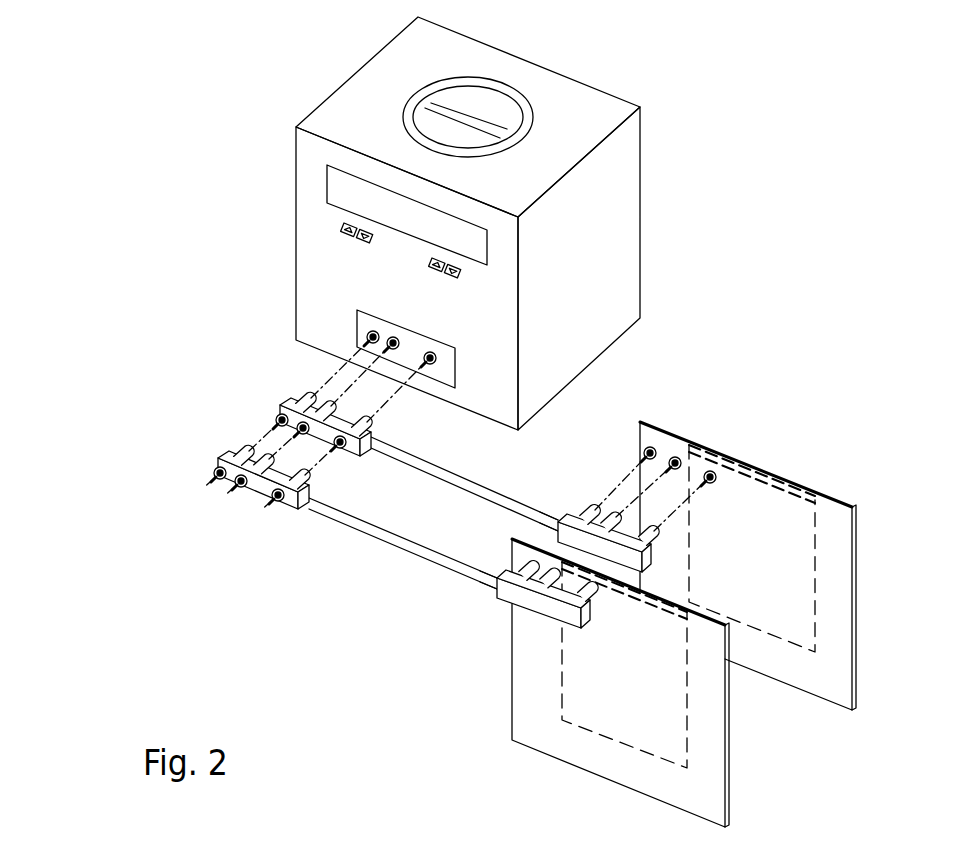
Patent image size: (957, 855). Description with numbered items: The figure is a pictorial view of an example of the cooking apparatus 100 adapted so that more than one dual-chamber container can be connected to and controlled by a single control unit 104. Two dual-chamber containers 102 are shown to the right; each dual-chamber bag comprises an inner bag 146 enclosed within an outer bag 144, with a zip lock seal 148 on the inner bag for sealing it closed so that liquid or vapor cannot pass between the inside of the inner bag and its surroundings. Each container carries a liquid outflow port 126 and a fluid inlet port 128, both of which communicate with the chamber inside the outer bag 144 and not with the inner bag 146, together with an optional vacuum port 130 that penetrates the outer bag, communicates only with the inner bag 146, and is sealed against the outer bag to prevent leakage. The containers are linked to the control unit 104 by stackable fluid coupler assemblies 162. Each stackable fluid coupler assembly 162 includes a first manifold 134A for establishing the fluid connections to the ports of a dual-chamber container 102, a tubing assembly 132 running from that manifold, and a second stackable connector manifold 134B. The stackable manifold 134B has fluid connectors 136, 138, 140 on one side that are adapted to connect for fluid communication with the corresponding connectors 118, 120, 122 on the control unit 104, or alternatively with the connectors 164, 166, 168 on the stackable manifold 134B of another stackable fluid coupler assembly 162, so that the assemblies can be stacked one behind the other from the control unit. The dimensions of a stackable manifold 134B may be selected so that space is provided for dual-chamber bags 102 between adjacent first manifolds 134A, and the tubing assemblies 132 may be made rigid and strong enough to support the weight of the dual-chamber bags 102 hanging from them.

The apparatus 100 is at (853, 128).
The dual-chamber container 102 is at (855, 507).
The control unit 104 is at (297, 230).
The connector on control unit 118 is at (367, 340).
The connector on control unit 120 is at (392, 337).
The connector on control unit 122 is at (437, 360).
The fluid outlet port 126 is at (652, 446).
The fluid inlet port 128 is at (677, 457).
The vacuum port 130 is at (710, 470).
The tubing assembly 132 is at (490, 486).
The first manifold 134A is at (645, 557).
The second stackable connector manifold 134B is at (276, 417).
The fluid connector 136 is at (248, 443).
The fluid connector 138 is at (267, 437).
The fluid connector 140 is at (313, 475).
The outer bag 144 is at (624, 776).
The inner bag 146 is at (688, 740).
The zip lock seal 148 is at (772, 477).
The stackable fluid coupler assembly 162 is at (552, 512).
The connector on stackable manifold 164 is at (220, 488).
The connector on stackable manifold 166 is at (238, 493).
The connector on stackable manifold 168 is at (274, 506).